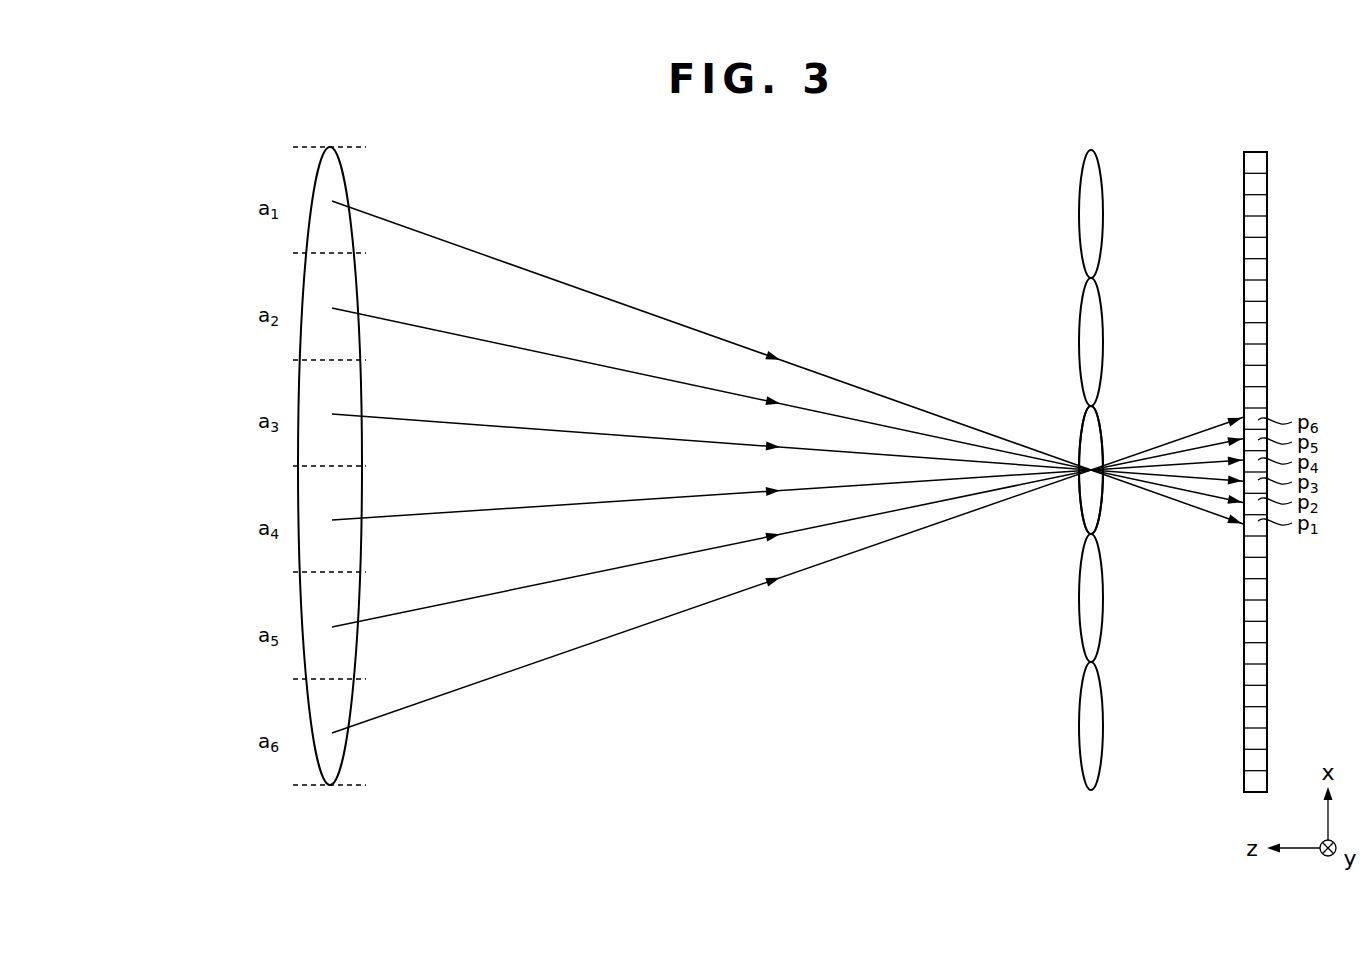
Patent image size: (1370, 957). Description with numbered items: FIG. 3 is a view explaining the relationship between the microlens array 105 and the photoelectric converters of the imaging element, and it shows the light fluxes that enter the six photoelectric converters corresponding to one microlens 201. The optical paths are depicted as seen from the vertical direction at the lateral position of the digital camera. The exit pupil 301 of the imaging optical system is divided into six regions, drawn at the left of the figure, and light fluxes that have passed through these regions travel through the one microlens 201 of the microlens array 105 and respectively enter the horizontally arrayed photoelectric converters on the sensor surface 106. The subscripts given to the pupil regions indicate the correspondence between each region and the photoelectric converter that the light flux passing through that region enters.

The exit pupil 301 is at (352, 184).
The microlens array 105 is at (1091, 150).
The microlens 201 is at (1088, 444).
The image sensor 106 is at (1255, 152).